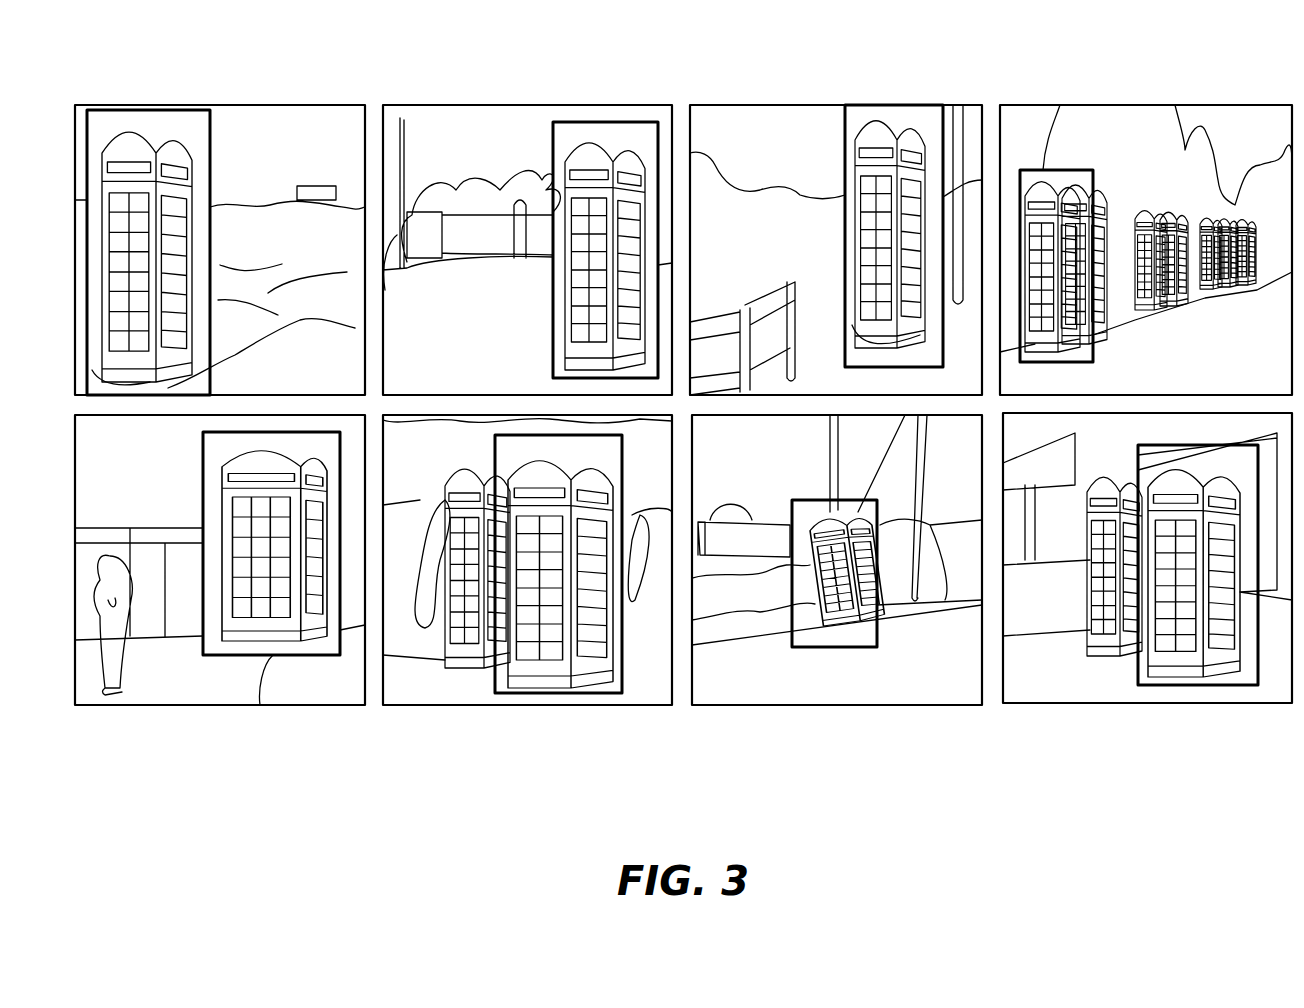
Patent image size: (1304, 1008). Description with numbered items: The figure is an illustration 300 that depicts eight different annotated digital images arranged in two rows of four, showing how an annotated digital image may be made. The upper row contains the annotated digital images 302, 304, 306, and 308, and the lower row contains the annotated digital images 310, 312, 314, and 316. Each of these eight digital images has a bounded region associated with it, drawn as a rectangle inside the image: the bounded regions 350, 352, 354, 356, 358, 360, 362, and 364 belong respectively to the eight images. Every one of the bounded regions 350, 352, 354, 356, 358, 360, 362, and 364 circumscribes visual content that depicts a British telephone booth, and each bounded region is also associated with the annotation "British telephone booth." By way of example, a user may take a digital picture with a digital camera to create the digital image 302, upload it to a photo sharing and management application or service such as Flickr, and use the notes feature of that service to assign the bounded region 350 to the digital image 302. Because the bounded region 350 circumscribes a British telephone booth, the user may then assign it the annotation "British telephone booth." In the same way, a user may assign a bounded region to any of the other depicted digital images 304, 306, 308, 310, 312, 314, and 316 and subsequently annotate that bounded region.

The illustration 300 is at (1060, 858).
The annotated digital image 302 is at (220, 214).
The annotated digital image 304 is at (527, 214).
The annotated digital image 306 is at (836, 214).
The annotated digital image 308 is at (1146, 214).
The annotated digital image 310 is at (220, 607).
The annotated digital image 312 is at (527, 607).
The annotated digital image 314 is at (837, 607).
The annotated digital image 316 is at (1147, 606).
The bounded region 350 is at (113, 108).
The bounded region 352 is at (617, 122).
The bounded region 354 is at (900, 105).
The bounded region 356 is at (1060, 105).
The bounded region 358 is at (258, 655).
The bounded region 360 is at (555, 693).
The bounded region 362 is at (828, 647).
The bounded region 364 is at (1195, 685).